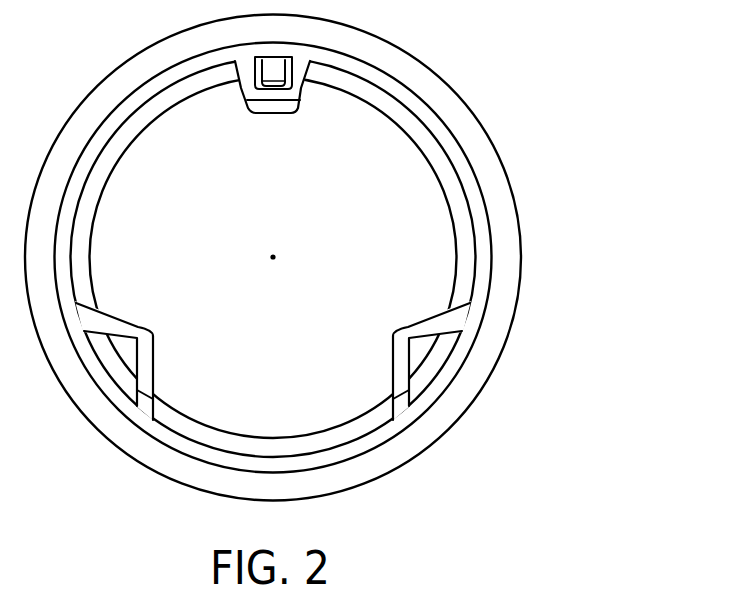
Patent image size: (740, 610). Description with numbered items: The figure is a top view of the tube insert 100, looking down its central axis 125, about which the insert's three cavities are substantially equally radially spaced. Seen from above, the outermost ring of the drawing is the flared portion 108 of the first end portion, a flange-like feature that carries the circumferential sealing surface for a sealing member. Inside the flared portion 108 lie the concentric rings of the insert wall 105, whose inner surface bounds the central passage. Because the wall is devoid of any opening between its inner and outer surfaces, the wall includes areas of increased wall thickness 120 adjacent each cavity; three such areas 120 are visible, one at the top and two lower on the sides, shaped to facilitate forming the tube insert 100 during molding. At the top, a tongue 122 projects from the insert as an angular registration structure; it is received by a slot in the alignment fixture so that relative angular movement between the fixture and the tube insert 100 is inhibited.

The tube insert 100 is at (306, 252).
The inner ring 105 is at (273, 257).
The flared portion 108 is at (303, 258).
The areas of increased wall thickness 120 is at (273, 237).
The tongue 122 is at (301, 98).
The central axis 125 is at (274, 257).